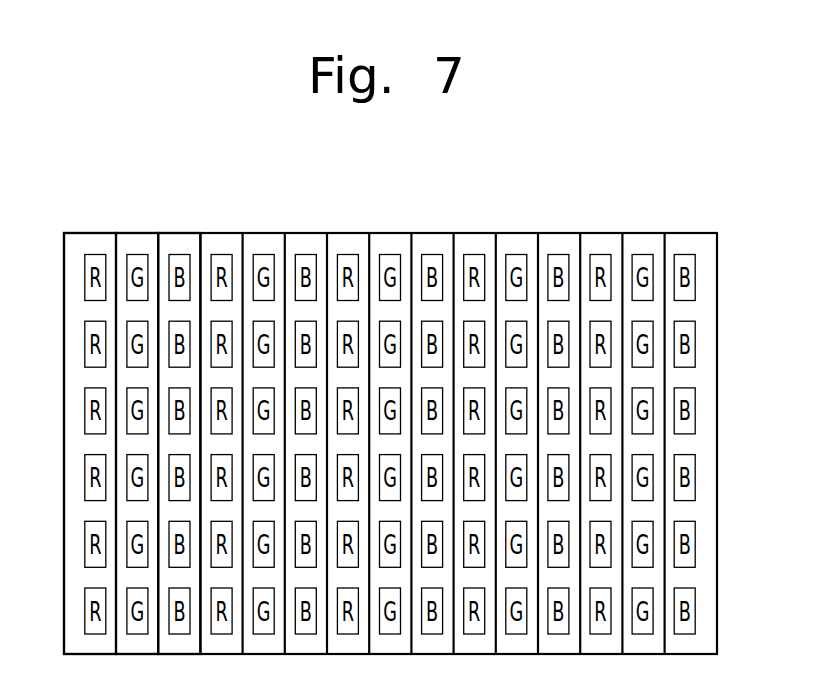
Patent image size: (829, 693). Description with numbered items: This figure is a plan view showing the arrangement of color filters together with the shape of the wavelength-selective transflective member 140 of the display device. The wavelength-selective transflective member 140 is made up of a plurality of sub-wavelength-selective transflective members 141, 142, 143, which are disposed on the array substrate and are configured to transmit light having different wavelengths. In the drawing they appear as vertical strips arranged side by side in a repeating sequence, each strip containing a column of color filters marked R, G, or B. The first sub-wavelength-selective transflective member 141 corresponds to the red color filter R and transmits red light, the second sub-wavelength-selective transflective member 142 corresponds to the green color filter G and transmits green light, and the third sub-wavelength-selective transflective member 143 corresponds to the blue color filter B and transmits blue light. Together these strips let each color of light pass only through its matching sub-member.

The wavelength-selective transflective member 140 is at (635, 174).
The first sub-wavelength-selective transflective member 141 is at (93, 243).
The second sub-wavelength-selective transflective member 142 is at (139, 243).
The third sub-wavelength-selective transflective member 143 is at (180, 243).